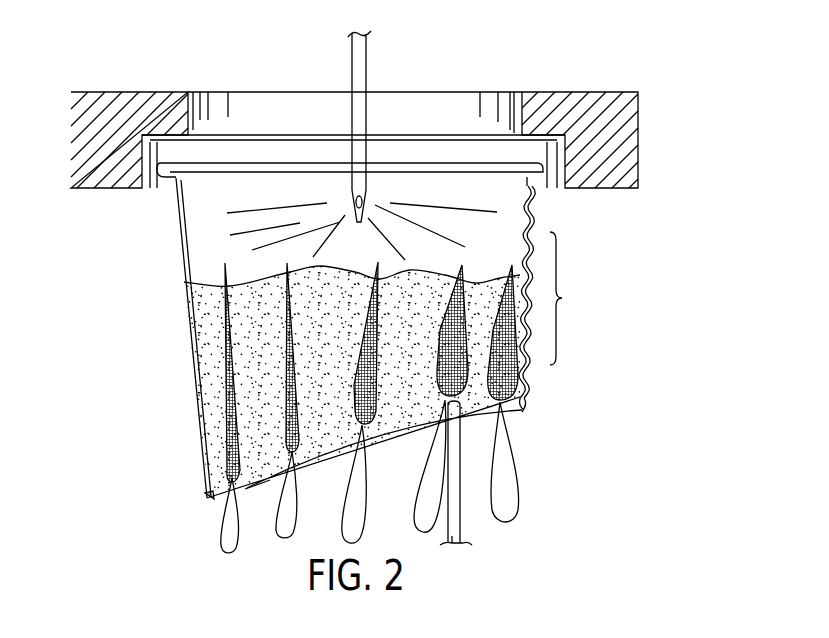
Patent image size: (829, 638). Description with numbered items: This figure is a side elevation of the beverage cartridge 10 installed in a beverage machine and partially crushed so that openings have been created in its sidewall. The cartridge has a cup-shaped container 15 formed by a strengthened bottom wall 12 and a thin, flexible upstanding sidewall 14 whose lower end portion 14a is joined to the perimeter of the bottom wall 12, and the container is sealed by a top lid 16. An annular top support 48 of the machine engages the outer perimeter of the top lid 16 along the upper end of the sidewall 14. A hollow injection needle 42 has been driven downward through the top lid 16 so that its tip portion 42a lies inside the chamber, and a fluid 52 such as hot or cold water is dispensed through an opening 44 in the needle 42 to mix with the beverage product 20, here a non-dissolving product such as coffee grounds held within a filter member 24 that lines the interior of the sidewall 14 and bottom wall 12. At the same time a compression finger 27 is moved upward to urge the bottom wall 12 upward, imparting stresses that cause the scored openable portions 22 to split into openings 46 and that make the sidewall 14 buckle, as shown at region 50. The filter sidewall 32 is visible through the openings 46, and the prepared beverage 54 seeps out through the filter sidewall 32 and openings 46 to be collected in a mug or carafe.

The beverage cartridge 10 is at (636, 232).
The bottom wall 12 is at (248, 489).
The sidewall 14 is at (190, 320).
The lower end portion 14a is at (160, 491).
The cup-shaped container 15 is at (597, 333).
The top lid 16 is at (400, 137).
The beverage product 20 is at (200, 268).
The openable portions 22 is at (222, 360).
The filter member 24 is at (263, 163).
The compression finger 27 is at (456, 522).
The filter sidewall 32 is at (532, 216).
The injection needle 42 is at (350, 70).
The tip portion 42a is at (357, 235).
The opening 44 is at (372, 205).
The openings 46 is at (507, 328).
The annular top support 48 is at (594, 92).
The buckled sidewall region 50 is at (569, 298).
The fluid 52 is at (263, 212).
The prepared beverage 54 is at (218, 535).